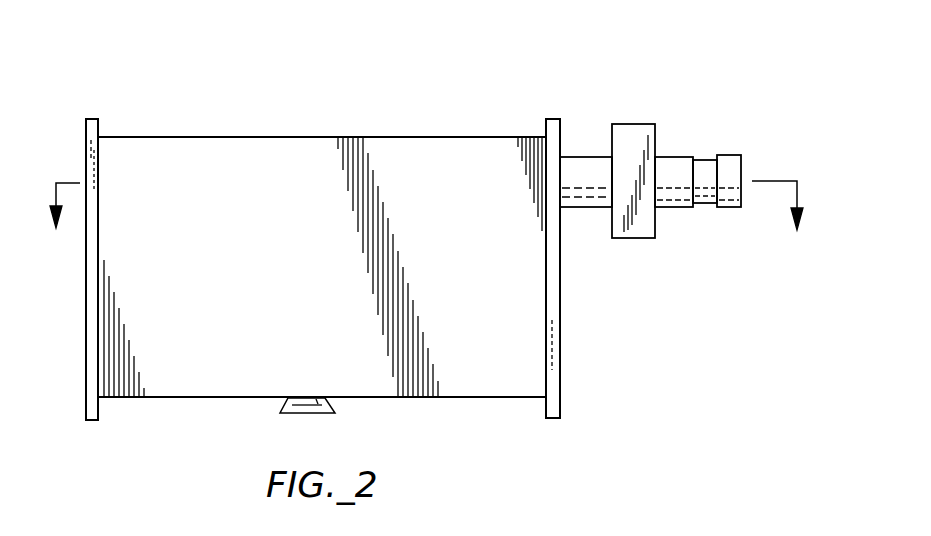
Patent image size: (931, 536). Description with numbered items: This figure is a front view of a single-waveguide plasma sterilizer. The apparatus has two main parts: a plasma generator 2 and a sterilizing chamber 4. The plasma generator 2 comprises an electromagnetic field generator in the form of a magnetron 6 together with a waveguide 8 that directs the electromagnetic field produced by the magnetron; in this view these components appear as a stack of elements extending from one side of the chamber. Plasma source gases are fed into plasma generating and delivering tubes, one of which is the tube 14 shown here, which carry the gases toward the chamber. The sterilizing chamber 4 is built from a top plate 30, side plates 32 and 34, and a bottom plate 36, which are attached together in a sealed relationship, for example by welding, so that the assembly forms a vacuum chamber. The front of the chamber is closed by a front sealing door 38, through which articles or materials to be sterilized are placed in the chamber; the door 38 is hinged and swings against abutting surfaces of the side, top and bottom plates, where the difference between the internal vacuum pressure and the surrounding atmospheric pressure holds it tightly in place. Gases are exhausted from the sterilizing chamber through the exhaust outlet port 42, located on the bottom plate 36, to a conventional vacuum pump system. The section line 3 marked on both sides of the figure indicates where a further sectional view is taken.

The plasma generator 2 is at (708, 220).
The section line 3- 3 is at (427, 221).
The sterilizing chamber 4 is at (373, 122).
The magnetron 6 is at (668, 157).
The waveguide 8 is at (632, 124).
The plasma generating and delivering tube 14 is at (727, 155).
The top plate 30 is at (183, 137).
The side plate 32 is at (86, 378).
The side plate 34 is at (561, 318).
The bottom plate 36 is at (213, 398).
The front sealing door 38 is at (262, 153).
The exhaust outlet port 42 is at (308, 414).